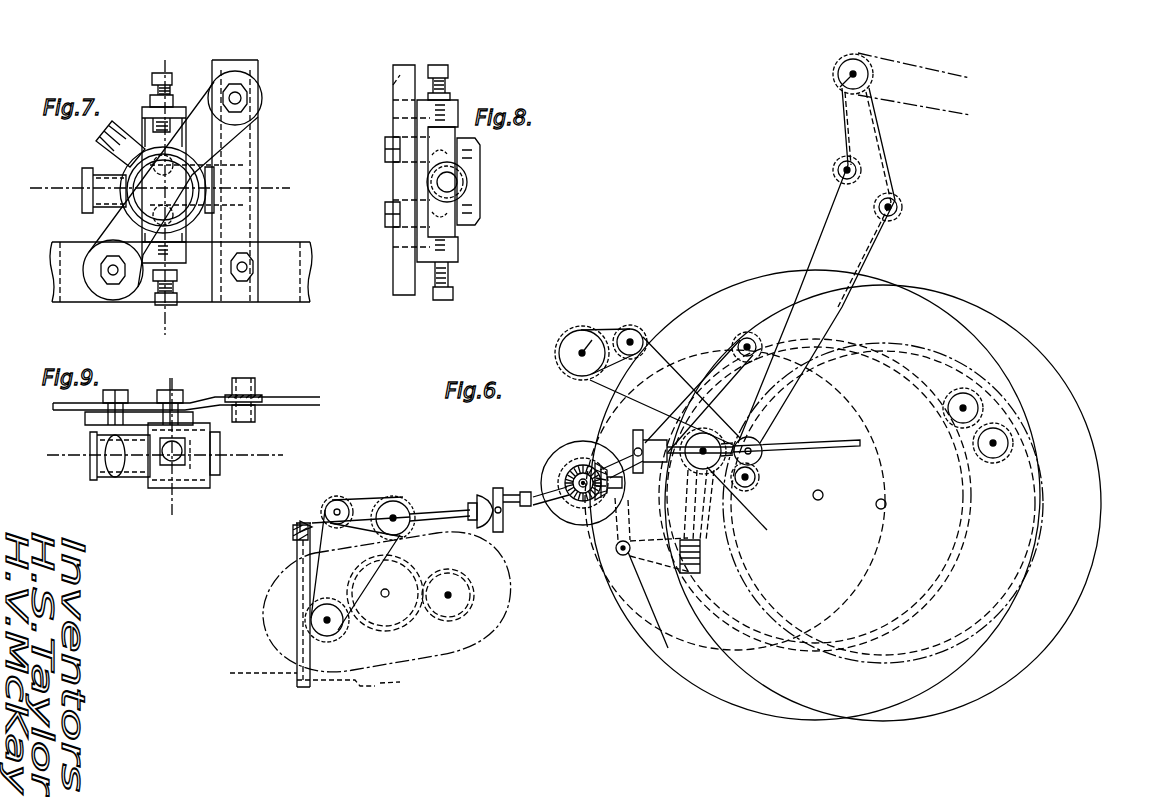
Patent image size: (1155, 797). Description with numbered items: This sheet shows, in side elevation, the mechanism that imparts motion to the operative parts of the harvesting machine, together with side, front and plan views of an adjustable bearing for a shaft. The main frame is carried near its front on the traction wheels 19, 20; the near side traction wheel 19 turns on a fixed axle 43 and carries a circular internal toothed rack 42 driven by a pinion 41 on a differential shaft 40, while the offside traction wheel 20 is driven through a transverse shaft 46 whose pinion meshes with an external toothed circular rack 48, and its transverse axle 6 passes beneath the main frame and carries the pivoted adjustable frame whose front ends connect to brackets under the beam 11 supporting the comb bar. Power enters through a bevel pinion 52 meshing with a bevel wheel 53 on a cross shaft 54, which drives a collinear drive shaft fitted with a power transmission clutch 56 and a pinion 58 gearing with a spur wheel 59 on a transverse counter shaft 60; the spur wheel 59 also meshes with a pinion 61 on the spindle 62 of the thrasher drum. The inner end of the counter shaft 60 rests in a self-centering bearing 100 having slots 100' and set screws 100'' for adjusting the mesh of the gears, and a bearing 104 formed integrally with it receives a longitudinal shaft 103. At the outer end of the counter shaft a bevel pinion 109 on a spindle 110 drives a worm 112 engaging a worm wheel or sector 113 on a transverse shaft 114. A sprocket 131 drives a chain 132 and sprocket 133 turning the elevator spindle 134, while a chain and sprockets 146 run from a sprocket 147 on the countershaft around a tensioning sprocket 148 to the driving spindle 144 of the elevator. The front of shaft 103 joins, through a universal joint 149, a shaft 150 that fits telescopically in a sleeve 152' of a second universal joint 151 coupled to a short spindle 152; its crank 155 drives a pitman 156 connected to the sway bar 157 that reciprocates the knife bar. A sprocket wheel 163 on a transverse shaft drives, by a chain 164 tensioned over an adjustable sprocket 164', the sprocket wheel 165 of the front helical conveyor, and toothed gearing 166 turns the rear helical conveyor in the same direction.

In FIG. 6, the transverse axle 6 is at (822, 490).
In FIG. 6, the beam 11 is at (390, 680).
In FIG. 6, the near side traction wheel 19 is at (1018, 680).
In FIG. 6, the offside traction wheel 20 is at (678, 676).
In FIG. 6, the differential shaft 40 is at (995, 442).
In FIG. 6, the pinion 41 is at (993, 462).
In FIG. 6, the circular internal toothed rack 42 is at (772, 598).
In FIG. 6, the fixed axle 43 is at (883, 510).
In FIG. 6, the transverse shaft 46 is at (965, 390).
In FIG. 6, the external toothed circular rack 48 is at (838, 345).
In FIG. 6, the bevel pinion 52 is at (588, 513).
In FIG. 6, the bevel wheel 53 is at (566, 497).
In FIG. 6, the cross shaft 54 is at (578, 510).
In FIG. 6, the power transmission clutch 56 is at (548, 455).
In FIG. 6, the pinion 58 is at (570, 460).
In FIG. 6, the spur wheel 59 is at (687, 352).
In FIG. 6, the counter shaft 60 is at (705, 470).
In FIG. 6, the pinion 61 is at (758, 330).
In FIG. 6, the spindle 62 is at (747, 340).
In FIG. 7, the self-centering bearing 100 is at (212, 190).
In FIG. 8, the self-centering bearing 100 is at (459, 180).
In FIG. 9, the self-centering bearing 100 is at (186, 452).
In FIG. 7, the slots 100' is at (206, 184).
In FIG. 7, the set screws 100'' is at (187, 197).
In FIG. 8, the set screws 100'' is at (467, 182).
In FIG. 9, the set screws 100'' is at (234, 415).
In FIG. 6, the longitudinal shaft 103 is at (848, 440).
In FIG. 7, the bearing 104 is at (95, 165).
In FIG. 9, the bearing 104 is at (105, 480).
In FIG. 6, the bevel pinion 109 is at (752, 505).
In FIG. 6, the spindle 110 is at (694, 531).
In FIG. 6, the worm 112 is at (676, 600).
In FIG. 6, the worm wheel or sector 113 is at (680, 572).
In FIG. 6, the transverse shaft 114 is at (617, 553).
In FIG. 6, the sprocket 131 is at (790, 410).
In FIG. 6, the chain 132 is at (814, 275).
In FIG. 6, the sprocket 133 is at (873, 76).
In FIG. 6, the spindle 134 is at (840, 87).
In FIG. 6, the driving spindle 144 is at (560, 345).
In FIG. 6, the chain and sprockets 146 is at (605, 333).
In FIG. 6, the sprocket 147 is at (660, 437).
In FIG. 6, the tensioning sprocket 148 is at (752, 484).
In FIG. 6, the universal joint 149 is at (604, 463).
In FIG. 6, the shaft 150 is at (565, 483).
In FIG. 6, the universal joint 151 is at (513, 523).
In FIG. 6, the short spindle 152 is at (440, 503).
In FIG. 6, the sleeve 152' is at (480, 492).
In FIG. 6, the crank 155 is at (296, 528).
In FIG. 6, the pitman 156 is at (300, 524).
In FIG. 6, the sway bar 157 is at (296, 563).
In FIG. 6, the sprocket wheel 163 is at (400, 500).
In FIG. 6, the chain 164 is at (368, 494).
In FIG. 6, the sprocket 164' is at (340, 498).
In FIG. 6, the sprocket wheel 165 is at (327, 636).
In FIG. 6, the toothed gearing 166 is at (400, 635).